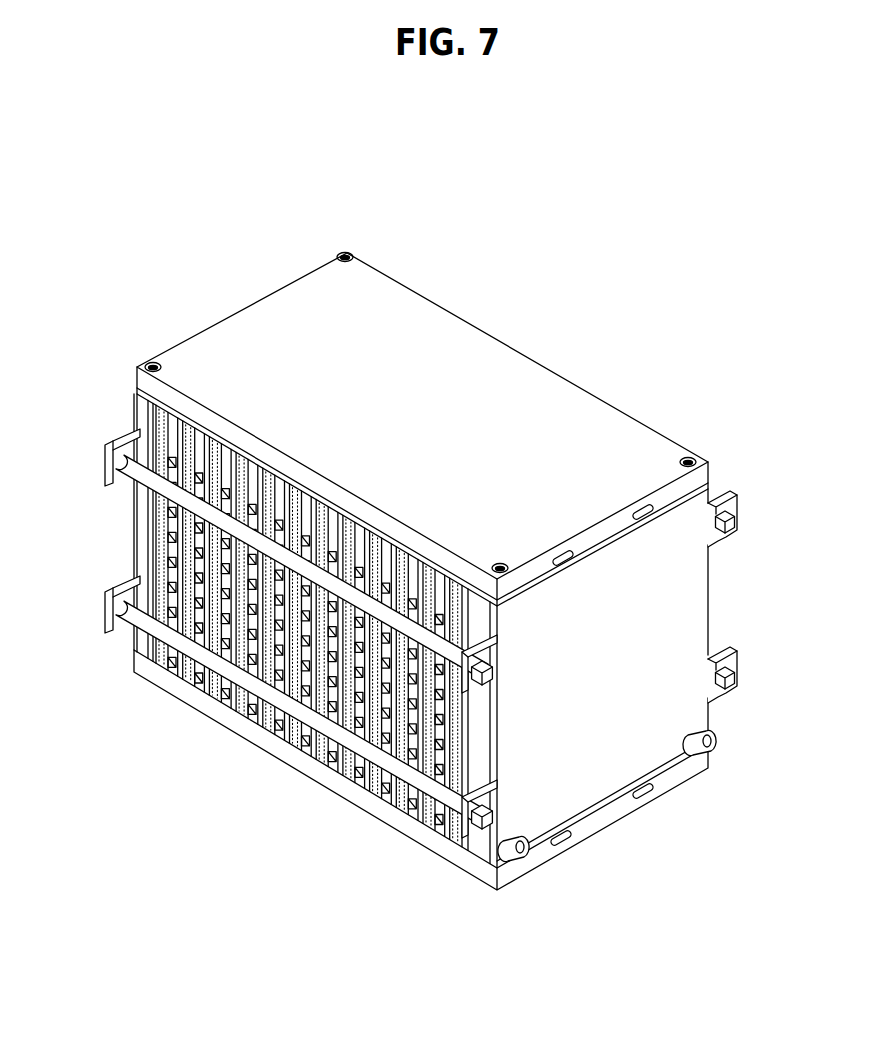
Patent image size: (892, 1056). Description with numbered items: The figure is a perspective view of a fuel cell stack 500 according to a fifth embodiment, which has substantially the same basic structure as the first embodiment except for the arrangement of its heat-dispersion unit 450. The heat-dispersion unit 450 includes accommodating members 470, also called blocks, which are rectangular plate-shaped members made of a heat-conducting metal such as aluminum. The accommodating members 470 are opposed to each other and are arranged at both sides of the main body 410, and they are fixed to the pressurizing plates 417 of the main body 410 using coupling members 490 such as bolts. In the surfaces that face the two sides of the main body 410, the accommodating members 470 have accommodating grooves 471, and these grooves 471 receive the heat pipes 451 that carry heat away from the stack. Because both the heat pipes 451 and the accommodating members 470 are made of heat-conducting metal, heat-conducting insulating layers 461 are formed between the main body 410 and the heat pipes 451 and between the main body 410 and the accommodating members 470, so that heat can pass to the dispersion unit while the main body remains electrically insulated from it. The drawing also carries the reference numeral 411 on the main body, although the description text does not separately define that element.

The fuel cell stack 500 is at (447, 145).
The coupling member 490 is at (346, 254).
The accommodating member 470 is at (486, 335).
The heat-dispersion unit 450 is at (576, 357).
The accommodating groove 471 is at (643, 508).
The heat pipe 451 is at (653, 514).
The heat-conducting insulating layer 461 is at (738, 527).
The main body 410 is at (723, 583).
The pressurizing plate 417 is at (133, 535).
The battery cell 411 is at (352, 786).